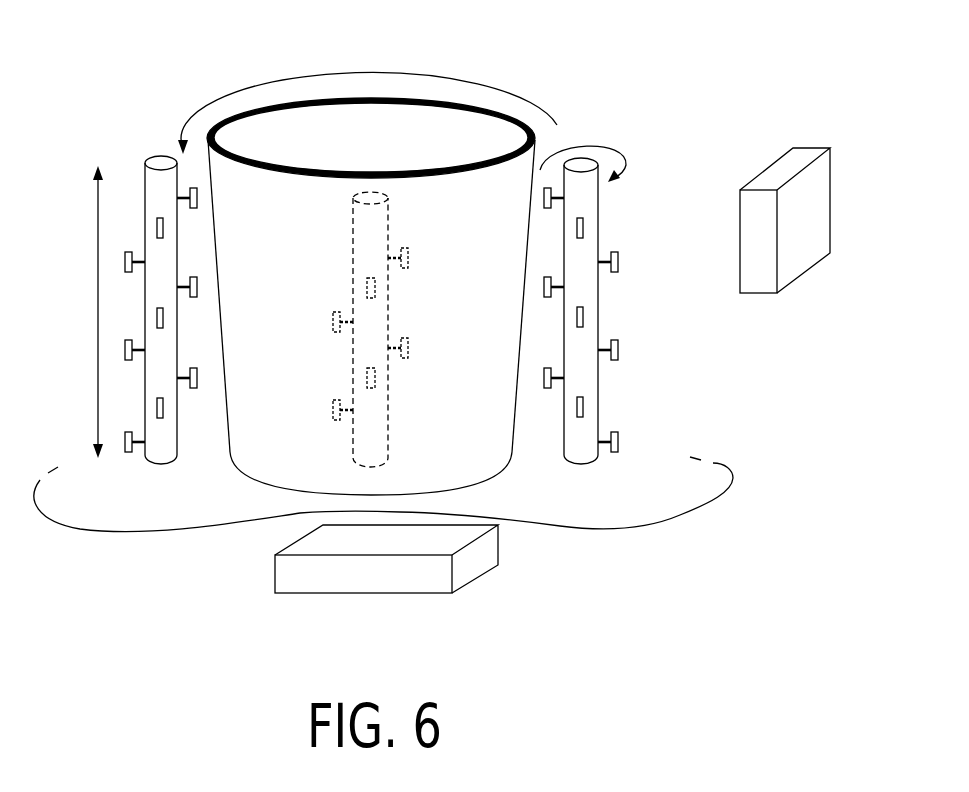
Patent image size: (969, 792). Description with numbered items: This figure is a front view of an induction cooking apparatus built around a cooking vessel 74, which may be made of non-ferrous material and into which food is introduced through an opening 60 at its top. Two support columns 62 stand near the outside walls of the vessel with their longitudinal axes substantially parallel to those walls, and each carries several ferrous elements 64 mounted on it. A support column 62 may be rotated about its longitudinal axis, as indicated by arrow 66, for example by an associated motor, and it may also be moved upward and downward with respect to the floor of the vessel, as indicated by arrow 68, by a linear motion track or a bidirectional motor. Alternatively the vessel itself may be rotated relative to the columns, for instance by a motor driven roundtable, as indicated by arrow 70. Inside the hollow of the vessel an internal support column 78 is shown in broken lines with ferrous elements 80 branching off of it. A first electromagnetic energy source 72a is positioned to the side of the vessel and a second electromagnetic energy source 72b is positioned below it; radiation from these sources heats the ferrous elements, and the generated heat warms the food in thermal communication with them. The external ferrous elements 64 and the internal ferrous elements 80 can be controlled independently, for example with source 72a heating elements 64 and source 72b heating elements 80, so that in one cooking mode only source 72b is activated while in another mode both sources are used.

The opening 60 is at (457, 125).
The support column 62 is at (619, 311).
The ferrous element 64 is at (612, 251).
The arrow 66 is at (583, 145).
The arrow 68 is at (98, 313).
The arrow 70 is at (370, 75).
The electromagnetic energy source 72a is at (807, 243).
The electromagnetic energy source 72b is at (364, 577).
The cooking vessel 74 is at (227, 408).
The internal support column 78 is at (406, 322).
The ferrous element 80 is at (405, 345).